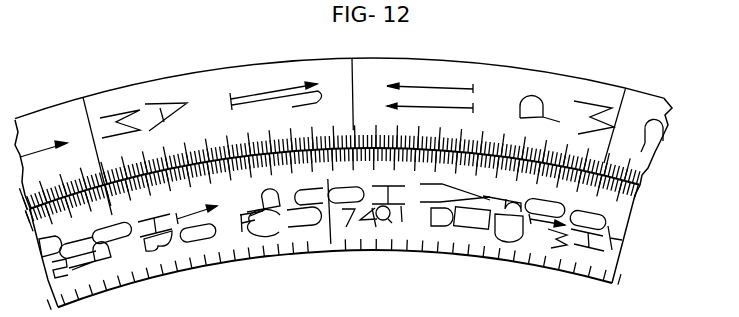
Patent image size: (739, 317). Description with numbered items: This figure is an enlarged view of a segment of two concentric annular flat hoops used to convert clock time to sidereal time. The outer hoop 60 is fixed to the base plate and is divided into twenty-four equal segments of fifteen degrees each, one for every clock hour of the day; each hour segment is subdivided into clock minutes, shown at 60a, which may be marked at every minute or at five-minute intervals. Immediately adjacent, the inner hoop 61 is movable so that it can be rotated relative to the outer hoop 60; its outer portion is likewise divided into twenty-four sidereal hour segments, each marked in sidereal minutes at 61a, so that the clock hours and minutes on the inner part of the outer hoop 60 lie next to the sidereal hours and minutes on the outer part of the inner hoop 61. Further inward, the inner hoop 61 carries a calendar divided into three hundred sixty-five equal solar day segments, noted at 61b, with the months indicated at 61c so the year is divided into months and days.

The outer hoop 60 is at (627, 135).
The clock minute subdivisions 60a is at (318, 128).
The inner hoop 61 is at (634, 213).
The sidereal minute subdivisions 61a is at (460, 163).
The solar day segments 61b is at (468, 248).
The month indications 61c is at (302, 222).